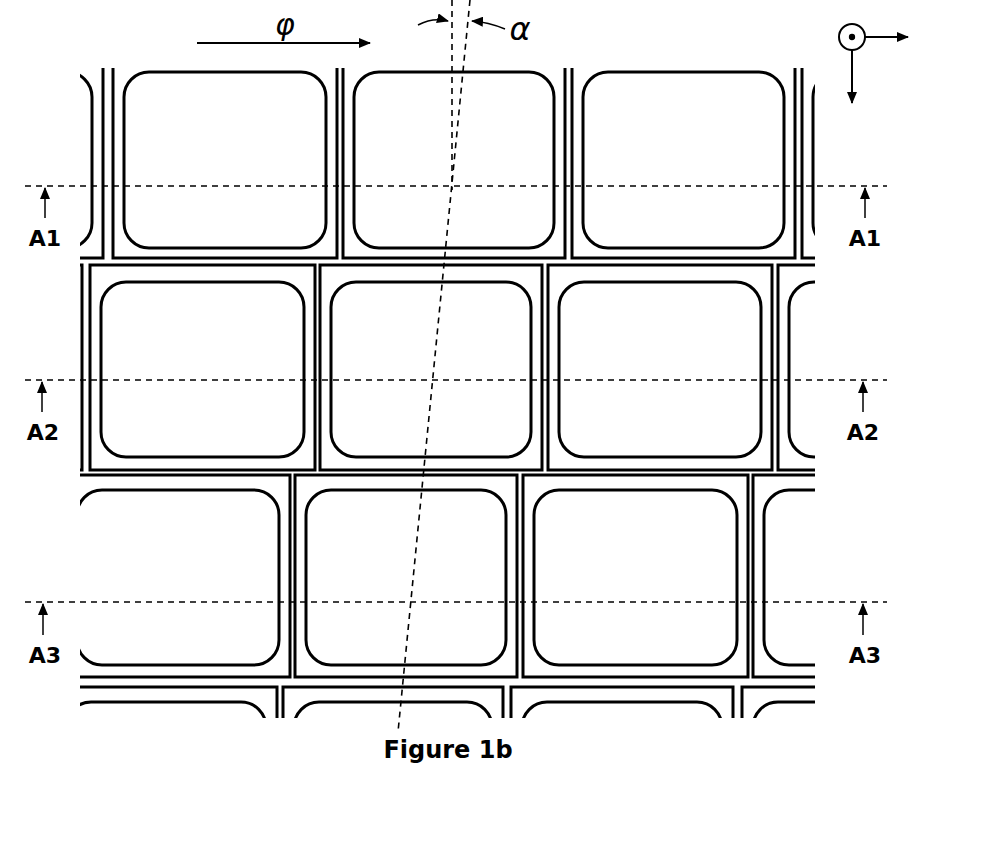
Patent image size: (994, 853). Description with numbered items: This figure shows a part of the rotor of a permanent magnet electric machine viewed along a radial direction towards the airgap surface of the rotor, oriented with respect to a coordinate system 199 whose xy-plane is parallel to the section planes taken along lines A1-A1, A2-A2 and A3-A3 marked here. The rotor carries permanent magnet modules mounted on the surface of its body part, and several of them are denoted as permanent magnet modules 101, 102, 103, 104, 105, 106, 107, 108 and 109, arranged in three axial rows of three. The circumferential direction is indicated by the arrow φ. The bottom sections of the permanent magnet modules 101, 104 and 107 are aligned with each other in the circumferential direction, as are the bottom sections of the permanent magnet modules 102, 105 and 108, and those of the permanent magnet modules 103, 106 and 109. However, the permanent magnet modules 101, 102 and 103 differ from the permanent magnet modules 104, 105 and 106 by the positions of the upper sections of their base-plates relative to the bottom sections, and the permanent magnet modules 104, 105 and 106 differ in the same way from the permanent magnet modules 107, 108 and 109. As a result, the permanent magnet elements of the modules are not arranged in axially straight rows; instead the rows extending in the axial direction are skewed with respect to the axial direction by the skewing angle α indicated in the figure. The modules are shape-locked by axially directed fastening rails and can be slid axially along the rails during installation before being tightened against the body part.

The permanent magnet module 101 is at (225, 156).
The permanent magnet module 102 is at (454, 156).
The permanent magnet module 103 is at (683, 156).
The permanent magnet module 104 is at (202, 367).
The permanent magnet module 105 is at (431, 367).
The permanent magnet module 106 is at (660, 367).
The permanent magnet module 107 is at (178, 576).
The permanent magnet module 108 is at (406, 576).
The permanent magnet module 109 is at (635, 576).
The coordinate system 199 is at (879, 71).